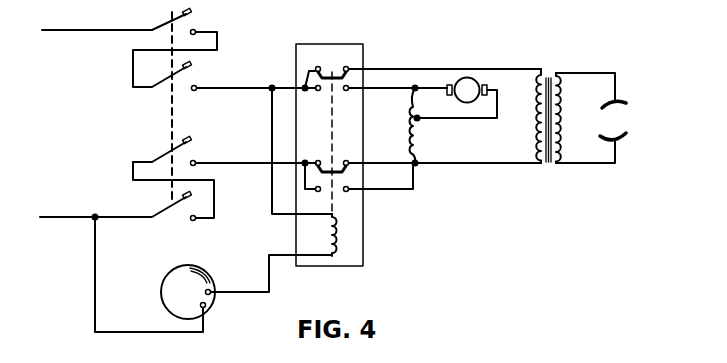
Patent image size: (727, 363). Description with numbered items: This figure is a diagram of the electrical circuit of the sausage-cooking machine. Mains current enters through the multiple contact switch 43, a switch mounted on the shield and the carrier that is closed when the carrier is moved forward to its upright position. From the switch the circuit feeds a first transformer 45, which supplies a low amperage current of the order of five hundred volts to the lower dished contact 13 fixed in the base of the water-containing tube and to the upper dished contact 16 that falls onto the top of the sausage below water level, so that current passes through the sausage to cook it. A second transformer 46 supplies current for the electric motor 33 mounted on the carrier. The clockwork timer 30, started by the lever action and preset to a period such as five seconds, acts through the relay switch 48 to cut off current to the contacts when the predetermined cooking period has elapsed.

The lower dished contact 13 is at (621, 138).
The upper dished contact 16 is at (621, 102).
The clockwork timer 30 is at (212, 305).
The electric motor 33 is at (465, 79).
The multiple contact switch 43 is at (168, 112).
The first transformer 45 is at (557, 191).
The second transformer 46 is at (420, 165).
The relay switch 48 is at (363, 247).